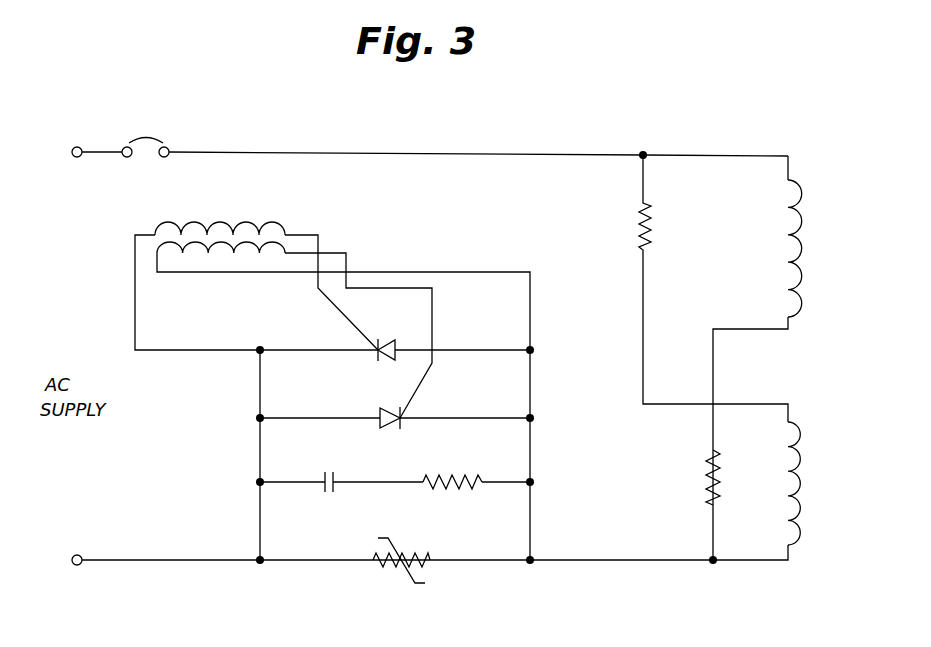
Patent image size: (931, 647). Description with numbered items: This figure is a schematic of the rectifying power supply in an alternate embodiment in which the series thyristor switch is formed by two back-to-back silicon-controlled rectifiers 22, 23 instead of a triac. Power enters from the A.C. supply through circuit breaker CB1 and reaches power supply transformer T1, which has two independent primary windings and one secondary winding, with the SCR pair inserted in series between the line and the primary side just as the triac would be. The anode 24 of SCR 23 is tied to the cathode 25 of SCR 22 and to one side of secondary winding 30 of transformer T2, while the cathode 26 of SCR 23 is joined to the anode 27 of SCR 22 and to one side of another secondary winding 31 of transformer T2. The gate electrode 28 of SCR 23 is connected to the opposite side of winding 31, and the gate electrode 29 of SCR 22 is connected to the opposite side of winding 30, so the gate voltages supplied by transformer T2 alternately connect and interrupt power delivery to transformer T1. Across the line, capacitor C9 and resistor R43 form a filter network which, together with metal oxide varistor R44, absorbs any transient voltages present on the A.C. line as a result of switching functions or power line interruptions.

The silicon-controlled rectifier 22 is at (400, 344).
The silicon-controlled rectifier 23 is at (370, 403).
The anode 24 is at (334, 421).
The cathode 25 is at (330, 352).
The cathode 26 is at (401, 421).
The anode 27 is at (409, 354).
The gate electrode 28 is at (418, 388).
The gate electrode 29 is at (349, 319).
The secondary winding 30 is at (253, 222).
The secondary winding 31 is at (286, 242).
The circuit breaker CB1 is at (145, 136).
The transformer T2 is at (245, 217).
The power supply transformer T1 is at (737, 357).
The capacitor C9 is at (323, 497).
The resistor R43 is at (452, 470).
The metal oxide varistor R44 is at (401, 577).